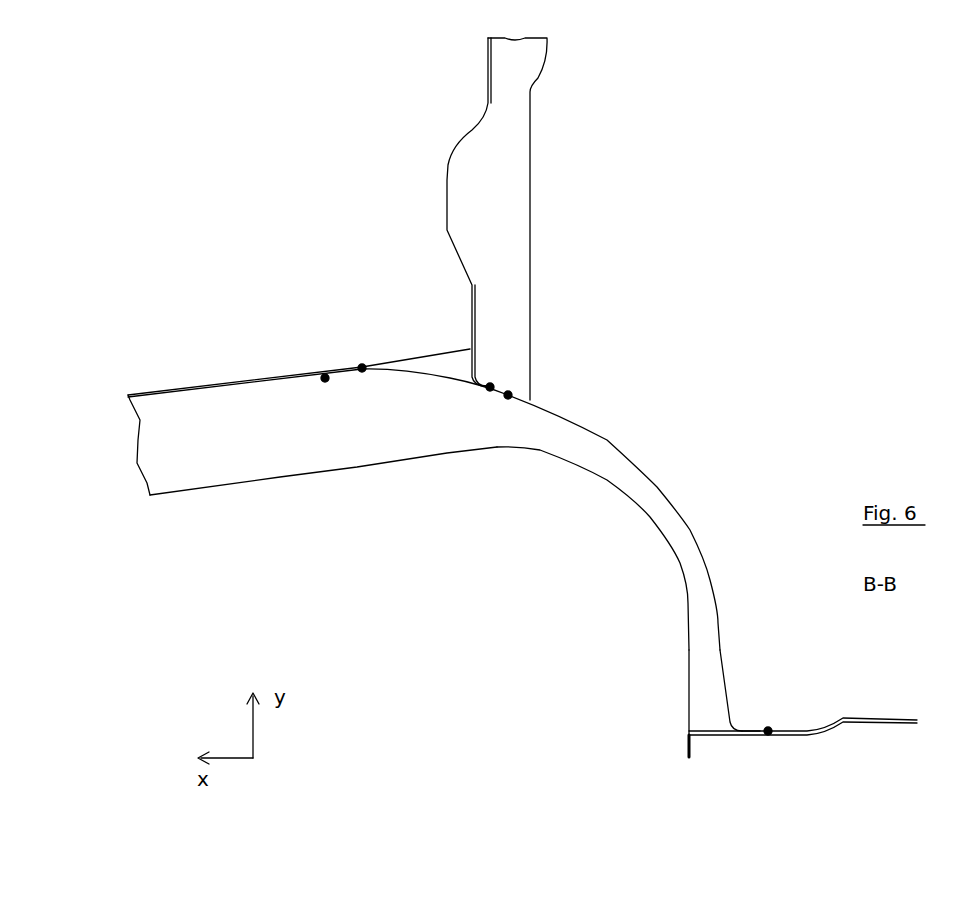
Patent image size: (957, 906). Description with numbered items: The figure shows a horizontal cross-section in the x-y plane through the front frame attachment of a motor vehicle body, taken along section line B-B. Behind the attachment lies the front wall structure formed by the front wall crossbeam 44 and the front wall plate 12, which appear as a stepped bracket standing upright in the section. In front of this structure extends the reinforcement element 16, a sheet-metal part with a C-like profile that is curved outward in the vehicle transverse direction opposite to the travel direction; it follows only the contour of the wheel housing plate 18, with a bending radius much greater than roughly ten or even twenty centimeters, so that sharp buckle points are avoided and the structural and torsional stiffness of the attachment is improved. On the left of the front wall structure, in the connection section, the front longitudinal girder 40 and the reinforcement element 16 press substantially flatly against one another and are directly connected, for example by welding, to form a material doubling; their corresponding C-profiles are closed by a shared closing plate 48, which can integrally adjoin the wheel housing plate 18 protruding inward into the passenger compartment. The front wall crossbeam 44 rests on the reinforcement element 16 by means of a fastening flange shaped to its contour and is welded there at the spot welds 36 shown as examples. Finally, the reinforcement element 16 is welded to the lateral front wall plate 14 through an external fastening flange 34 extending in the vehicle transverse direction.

The front wall plate 12 is at (533, 190).
The lateral front wall plate 14 is at (823, 728).
The reinforcement element 16 is at (690, 523).
The wheel housing plate 18 is at (687, 645).
The external fastening flange 34 is at (747, 728).
The spot welds 36 is at (325, 378).
The front longitudinal girder 40 is at (227, 383).
The front wall crossbeam 44 is at (448, 232).
The closing plate 48 is at (357, 467).